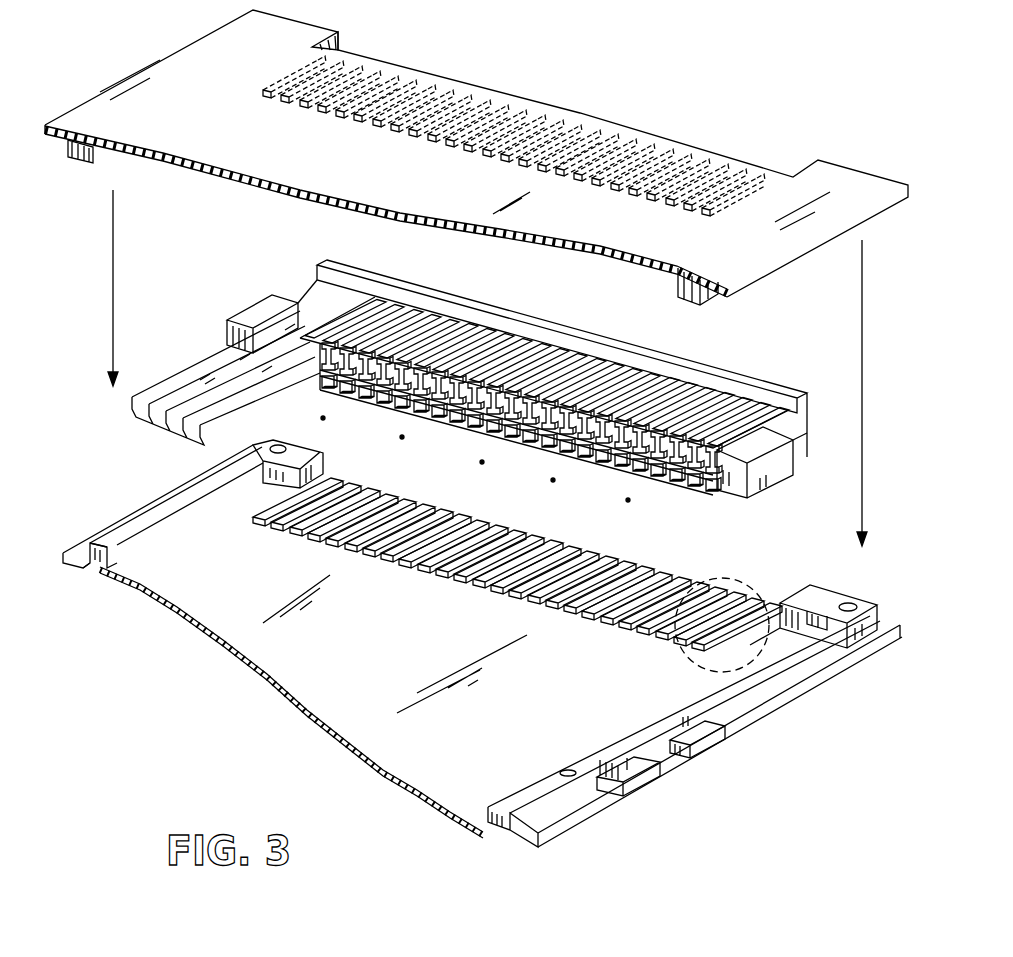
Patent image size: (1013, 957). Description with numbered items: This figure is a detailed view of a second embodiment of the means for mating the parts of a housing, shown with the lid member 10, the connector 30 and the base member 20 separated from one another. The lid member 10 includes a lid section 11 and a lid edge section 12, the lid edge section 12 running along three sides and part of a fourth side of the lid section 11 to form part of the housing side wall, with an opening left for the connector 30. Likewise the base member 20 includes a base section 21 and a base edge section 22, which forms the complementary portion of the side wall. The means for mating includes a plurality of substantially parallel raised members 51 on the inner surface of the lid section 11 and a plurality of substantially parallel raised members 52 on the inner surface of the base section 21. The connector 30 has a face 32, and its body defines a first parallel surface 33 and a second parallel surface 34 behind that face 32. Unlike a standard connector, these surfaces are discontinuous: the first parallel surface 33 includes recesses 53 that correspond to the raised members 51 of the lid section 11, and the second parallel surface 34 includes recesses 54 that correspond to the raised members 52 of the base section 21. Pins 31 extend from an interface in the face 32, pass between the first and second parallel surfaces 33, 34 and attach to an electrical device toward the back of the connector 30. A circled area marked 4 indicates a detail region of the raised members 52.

The lid member 10 is at (48, 100).
The lid section 11 is at (197, 137).
The raised members 51 is at (532, 110).
The lid edge section 12 is at (702, 292).
The connector 30 is at (278, 273).
The pins 31 is at (183, 378).
The first parallel surface 33 is at (513, 357).
The recesses 53 is at (667, 440).
The recesses 54 is at (613, 453).
The second parallel surface 34 is at (461, 414).
The face 32 is at (810, 420).
The base member 20 is at (565, 836).
The base section 21 is at (258, 634).
The base edge section 22 is at (127, 547).
The raised members 52 is at (483, 537).
The detail circle for FIG. 4 is at (704, 576).